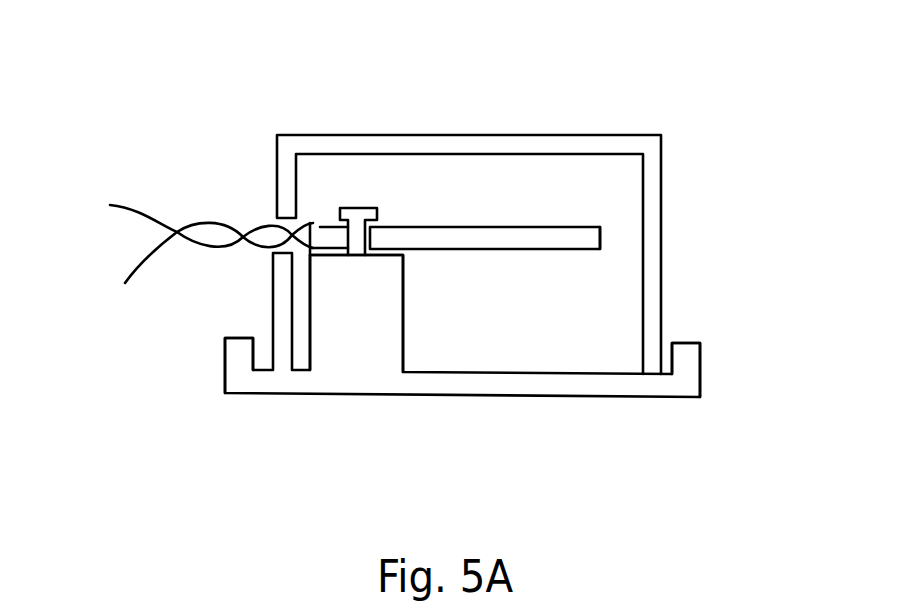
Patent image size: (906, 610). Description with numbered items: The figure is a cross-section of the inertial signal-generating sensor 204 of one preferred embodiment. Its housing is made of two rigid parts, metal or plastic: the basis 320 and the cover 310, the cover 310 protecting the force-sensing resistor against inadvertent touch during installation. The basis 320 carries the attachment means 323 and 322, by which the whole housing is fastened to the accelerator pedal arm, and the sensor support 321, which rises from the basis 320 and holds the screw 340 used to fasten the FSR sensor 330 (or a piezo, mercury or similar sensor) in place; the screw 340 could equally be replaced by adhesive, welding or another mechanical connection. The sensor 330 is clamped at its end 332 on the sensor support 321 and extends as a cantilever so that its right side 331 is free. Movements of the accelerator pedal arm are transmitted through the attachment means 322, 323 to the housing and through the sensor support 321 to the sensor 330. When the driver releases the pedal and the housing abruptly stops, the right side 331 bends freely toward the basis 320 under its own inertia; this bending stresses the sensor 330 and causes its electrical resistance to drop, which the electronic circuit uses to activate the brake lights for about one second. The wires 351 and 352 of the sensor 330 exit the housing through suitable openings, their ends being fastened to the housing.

The sensor 204 is at (203, 402).
The cover 310 is at (525, 150).
The basis 320 is at (528, 385).
The sensor support 321 is at (362, 355).
The attachment means 322 is at (690, 358).
The attachment means 323 is at (233, 353).
The FSR sensor 330 is at (473, 237).
The right side of the sensor 331 is at (585, 237).
The end of the sensor 332 is at (325, 228).
The screw 340 is at (358, 228).
The wire 351 is at (175, 215).
The wire 352 is at (189, 266).